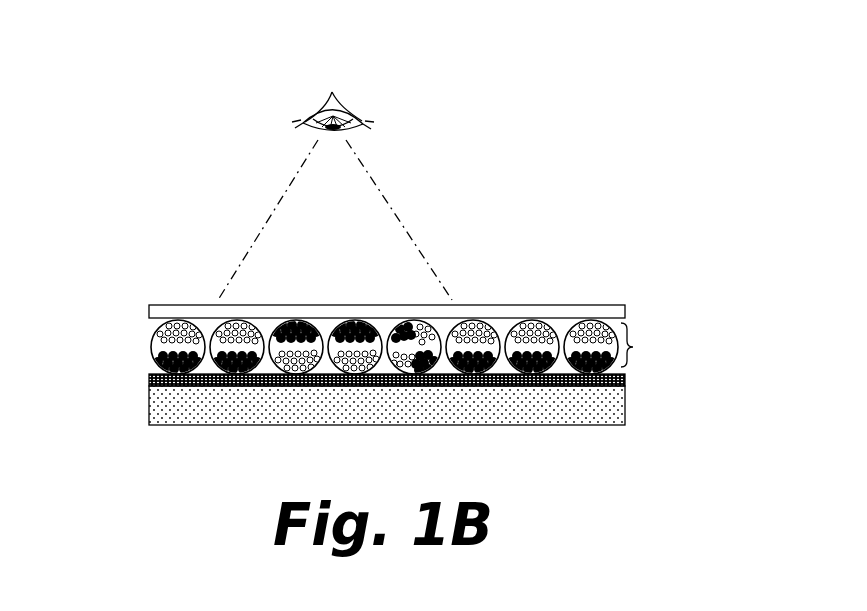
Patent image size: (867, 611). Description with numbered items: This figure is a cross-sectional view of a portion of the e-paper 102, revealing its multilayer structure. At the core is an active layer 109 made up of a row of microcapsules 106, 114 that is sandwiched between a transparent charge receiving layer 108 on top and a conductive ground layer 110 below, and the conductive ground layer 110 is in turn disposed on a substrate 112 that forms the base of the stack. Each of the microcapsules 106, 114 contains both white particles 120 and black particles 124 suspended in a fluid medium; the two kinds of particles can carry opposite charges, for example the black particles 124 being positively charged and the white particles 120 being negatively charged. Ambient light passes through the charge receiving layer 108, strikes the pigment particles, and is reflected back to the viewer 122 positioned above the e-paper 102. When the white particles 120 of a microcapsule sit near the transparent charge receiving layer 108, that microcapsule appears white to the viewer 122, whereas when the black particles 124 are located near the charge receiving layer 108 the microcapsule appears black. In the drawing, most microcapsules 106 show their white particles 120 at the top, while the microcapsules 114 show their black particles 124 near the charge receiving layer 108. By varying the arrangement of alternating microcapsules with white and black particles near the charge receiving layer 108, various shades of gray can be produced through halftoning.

The e-paper 102 is at (529, 193).
The microcapsules 106 is at (525, 320).
The transparent charge receiving layer 108 is at (366, 266).
The active layer 109 is at (651, 345).
The conductive ground layer 110 is at (153, 378).
The substrate 112 is at (387, 423).
The microcapsules 114 is at (348, 352).
The white particles 120 is at (160, 335).
The viewer 122 is at (362, 100).
The black particles 124 is at (155, 357).